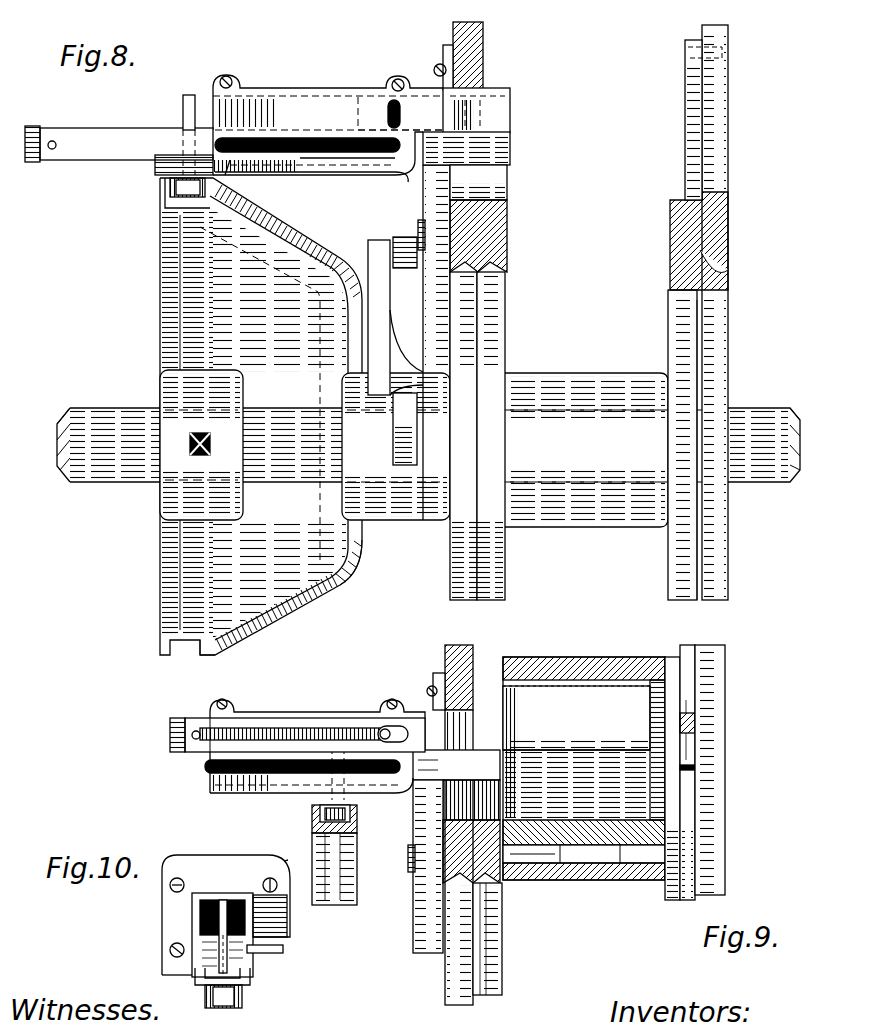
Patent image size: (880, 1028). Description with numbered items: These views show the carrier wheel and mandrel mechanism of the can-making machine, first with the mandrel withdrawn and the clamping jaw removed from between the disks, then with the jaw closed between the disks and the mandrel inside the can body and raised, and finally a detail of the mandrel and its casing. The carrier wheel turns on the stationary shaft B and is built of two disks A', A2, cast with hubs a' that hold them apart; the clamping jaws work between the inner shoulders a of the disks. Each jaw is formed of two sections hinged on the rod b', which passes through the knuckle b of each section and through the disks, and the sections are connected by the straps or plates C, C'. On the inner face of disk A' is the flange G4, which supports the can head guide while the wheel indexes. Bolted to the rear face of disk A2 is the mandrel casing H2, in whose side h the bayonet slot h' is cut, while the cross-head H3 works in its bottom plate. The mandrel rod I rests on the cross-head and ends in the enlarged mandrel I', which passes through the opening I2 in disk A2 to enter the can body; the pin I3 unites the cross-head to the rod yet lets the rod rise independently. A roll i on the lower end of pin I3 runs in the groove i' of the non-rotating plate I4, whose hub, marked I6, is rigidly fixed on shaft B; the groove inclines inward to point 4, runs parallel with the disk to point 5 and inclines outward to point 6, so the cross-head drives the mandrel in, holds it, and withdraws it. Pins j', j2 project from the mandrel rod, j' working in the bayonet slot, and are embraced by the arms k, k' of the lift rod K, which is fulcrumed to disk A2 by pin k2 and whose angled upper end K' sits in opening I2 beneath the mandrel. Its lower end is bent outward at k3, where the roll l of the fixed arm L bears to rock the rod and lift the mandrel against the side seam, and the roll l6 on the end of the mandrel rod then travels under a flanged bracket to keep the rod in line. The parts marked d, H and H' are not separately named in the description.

In FIG. 8, the stationary shaft B is at (105, 470).
In FIG. 8, the circular plate I4 is at (261, 416).
In FIG. 8, the hub collar I6 is at (240, 502).
In FIG. 8, the lift rod K is at (396, 342).
In FIG. 9, the lift rod K is at (410, 866).
In FIG. 8, the outwardly bent portion of lift rod k3 is at (402, 425).
In FIG. 8, the fixed arm L is at (385, 318).
In FIG. 8, the roll l is at (408, 270).
In FIG. 8, the pin k2 is at (418, 226).
In FIG. 9, the pin k2 is at (410, 862).
In FIG. 8, the point of groove 4 is at (335, 262).
In FIG. 8, the point of groove 5 is at (356, 568).
In FIG. 8, the point of groove 6 is at (204, 652).
In FIG. 8, the hubs a' is at (559, 436).
In FIG. 9, the hubs a' is at (488, 907).
In FIG. 8, the disk A2 is at (485, 62).
In FIG. 9, the disk A2 is at (472, 650).
In FIG. 8, the opening I2 is at (490, 90).
In FIG. 8, the mandrel I' is at (477, 145).
In FIG. 9, the mandrel I' is at (584, 768).
In FIG. 8, the upper end of lift rod K' is at (497, 181).
In FIG. 9, the upper end of lift rod K' is at (456, 785).
In FIG. 8, the hub d is at (508, 208).
In FIG. 8, the disk A' is at (721, 312).
In FIG. 9, the disk A' is at (727, 770).
In FIG. 8, the inner shoulders a is at (685, 241).
In FIG. 8, the flange G4 is at (686, 46).
In FIG. 8, the mandrel frame or casing H2 is at (292, 88).
In FIG. 9, the mandrel frame or casing H2 is at (270, 712).
In FIG. 8, the side of casing h is at (297, 116).
In FIG. 9, the side of casing h is at (301, 847).
In FIG. 10, the side of casing h is at (279, 913).
In FIG. 8, the bayonet slot h' is at (406, 114).
In FIG. 9, the bayonet slot h' is at (284, 805).
In FIG. 8, the arm of lift rod k is at (307, 127).
In FIG. 9, the arm of lift rod k is at (286, 742).
In FIG. 8, the arm of lift rod k' is at (310, 177).
In FIG. 8, the pin or stud j' is at (238, 134).
In FIG. 9, the pin or stud j' is at (383, 709).
In FIG. 8, the mandrel rod I is at (126, 159).
In FIG. 9, the mandrel rod I is at (295, 718).
In FIG. 10, the mandrel rod I is at (275, 956).
In FIG. 8, the roll l6 is at (33, 126).
In FIG. 8, the pin or stud j2 is at (56, 141).
In FIG. 9, the pin or stud j2 is at (190, 748).
In FIG. 10, the pin or stud j2 is at (285, 948).
In FIG. 8, the cross-head pin I3 is at (183, 106).
In FIG. 10, the cross-head pin I3 is at (224, 905).
In FIG. 8, the roll i is at (170, 198).
In FIG. 9, the roll i is at (348, 820).
In FIG. 10, the roll i is at (237, 1000).
In FIG. 8, the groove or runway i' is at (160, 445).
In FIG. 9, the wall H is at (628, 735).
In FIG. 9, the wall H' is at (492, 684).
In FIG. 9, the rod b' is at (584, 872).
In FIG. 9, the knuckle b is at (584, 882).
In FIG. 9, the strap or plate C is at (667, 762).
In FIG. 9, the strap or plate C' is at (702, 761).
In FIG. 9, the cross-head H3 is at (358, 803).
In FIG. 10, the cross-head H3 is at (252, 984).